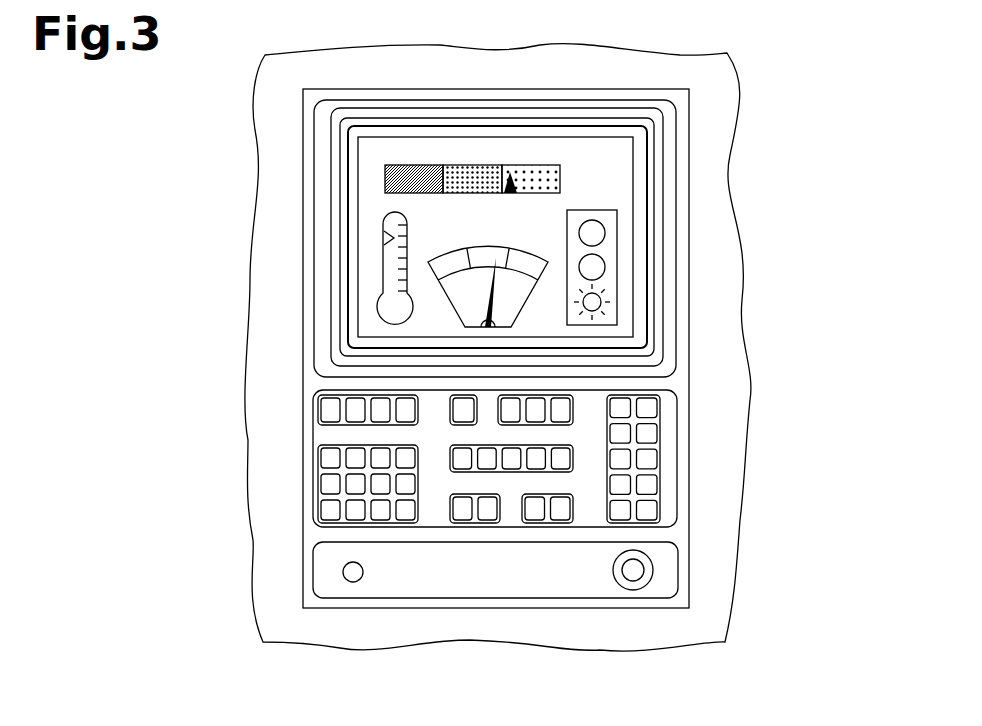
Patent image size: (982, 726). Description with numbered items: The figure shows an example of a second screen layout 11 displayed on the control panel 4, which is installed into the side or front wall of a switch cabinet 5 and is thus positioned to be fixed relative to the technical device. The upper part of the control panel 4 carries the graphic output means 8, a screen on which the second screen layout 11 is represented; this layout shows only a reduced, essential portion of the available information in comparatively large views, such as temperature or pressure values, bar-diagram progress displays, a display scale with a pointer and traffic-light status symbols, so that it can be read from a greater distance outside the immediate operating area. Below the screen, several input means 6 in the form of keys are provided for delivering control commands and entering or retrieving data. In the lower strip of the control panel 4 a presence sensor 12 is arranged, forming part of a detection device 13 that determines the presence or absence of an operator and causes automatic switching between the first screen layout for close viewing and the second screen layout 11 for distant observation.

The control panel 4 is at (306, 381).
The switch cabinet 5 is at (270, 98).
The input means 6 is at (317, 483).
The graphic output means 8 is at (363, 230).
The second screen layout 11 is at (667, 162).
The presence sensor 12 is at (635, 570).
The detection device 13 is at (665, 558).